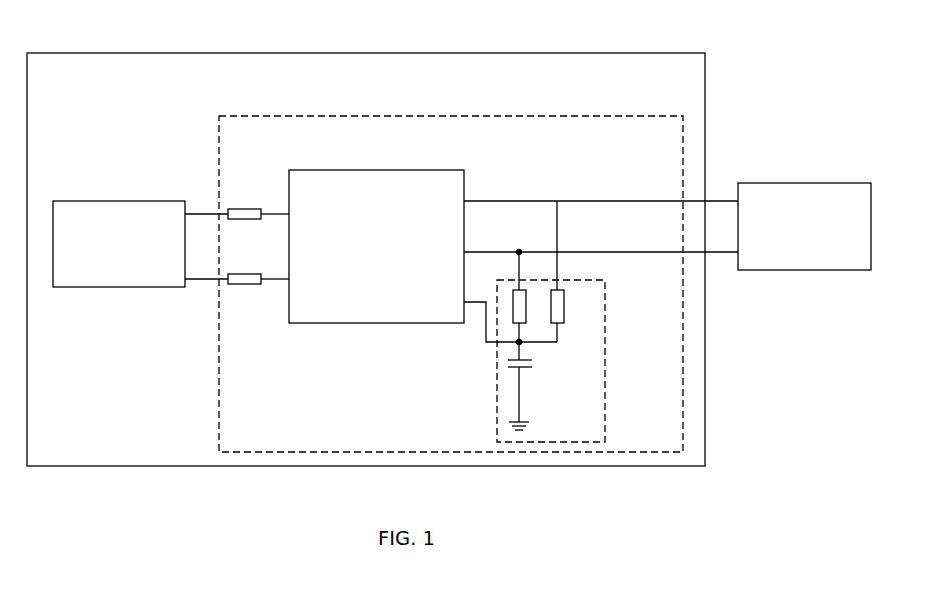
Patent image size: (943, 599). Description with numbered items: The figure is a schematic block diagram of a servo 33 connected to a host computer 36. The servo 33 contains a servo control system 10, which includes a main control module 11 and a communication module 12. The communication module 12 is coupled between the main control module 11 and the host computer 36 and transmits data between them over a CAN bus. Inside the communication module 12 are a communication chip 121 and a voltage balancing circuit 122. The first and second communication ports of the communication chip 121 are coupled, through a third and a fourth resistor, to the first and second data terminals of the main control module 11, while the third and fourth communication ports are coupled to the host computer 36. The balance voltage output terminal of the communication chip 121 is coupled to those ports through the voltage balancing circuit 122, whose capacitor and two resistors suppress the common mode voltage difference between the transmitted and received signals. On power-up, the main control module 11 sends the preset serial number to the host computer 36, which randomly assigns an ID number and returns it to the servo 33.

The servo control system 10 is at (449, 243).
The servo 33 is at (327, 53).
The main control module 11 is at (131, 201).
The communication module 12 is at (480, 116).
The communication chip 121 is at (376, 170).
The voltage balancing circuit 122 is at (605, 310).
The host computer 36 is at (805, 183).